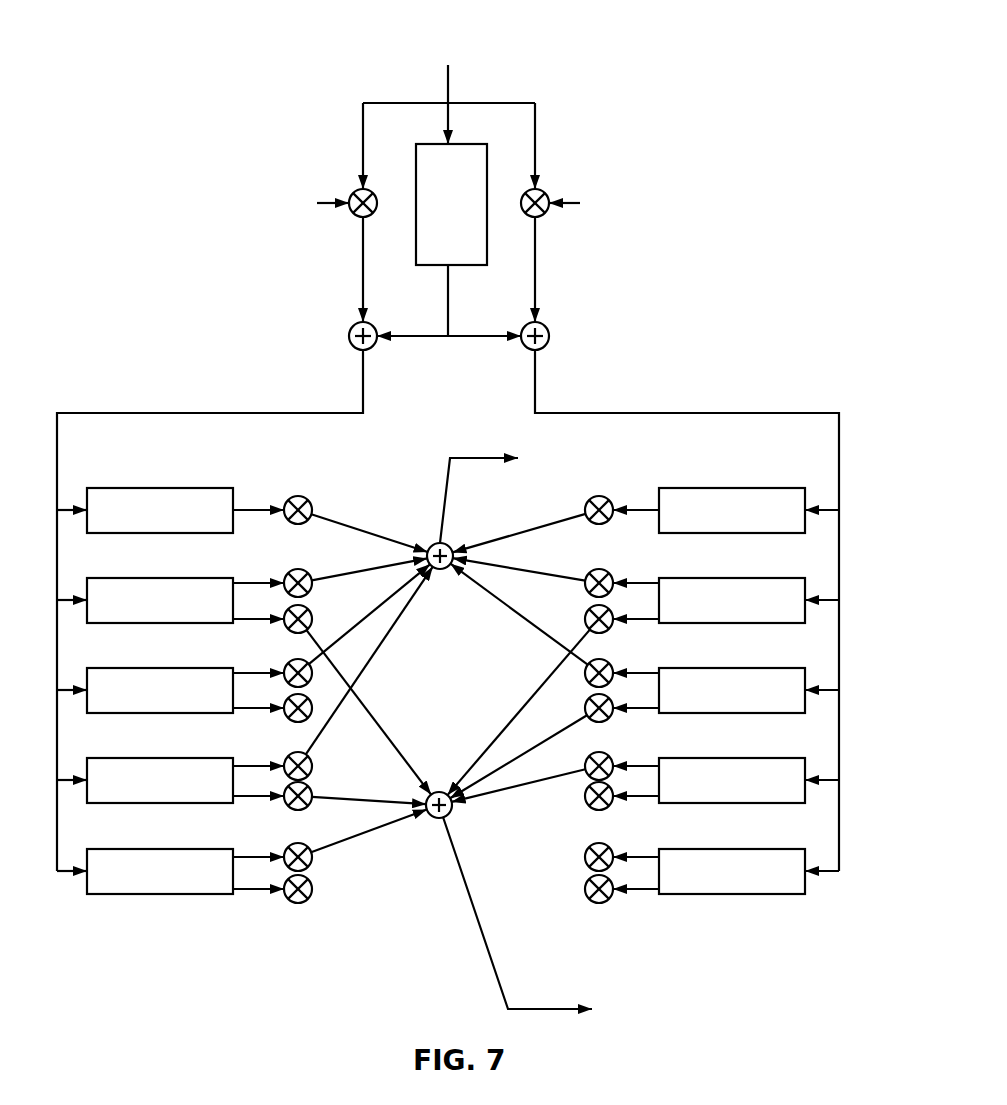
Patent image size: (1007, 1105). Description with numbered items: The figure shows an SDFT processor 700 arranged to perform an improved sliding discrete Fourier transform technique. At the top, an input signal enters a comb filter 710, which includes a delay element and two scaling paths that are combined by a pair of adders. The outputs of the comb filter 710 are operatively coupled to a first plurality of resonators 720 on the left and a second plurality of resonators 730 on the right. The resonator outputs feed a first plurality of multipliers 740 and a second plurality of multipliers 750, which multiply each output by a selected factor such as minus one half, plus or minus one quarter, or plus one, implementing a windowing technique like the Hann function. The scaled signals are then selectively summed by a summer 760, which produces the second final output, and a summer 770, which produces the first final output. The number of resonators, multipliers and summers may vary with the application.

The SDFT processor 700 is at (736, 127).
The comb filter 710 is at (240, 68).
The first plurality of resonators 720 is at (240, 932).
The second plurality of resonators 730 is at (840, 925).
The first plurality of multipliers 740 is at (332, 932).
The second plurality of multipliers 750 is at (647, 925).
The summer 760 is at (428, 817).
The summer 770 is at (436, 569).